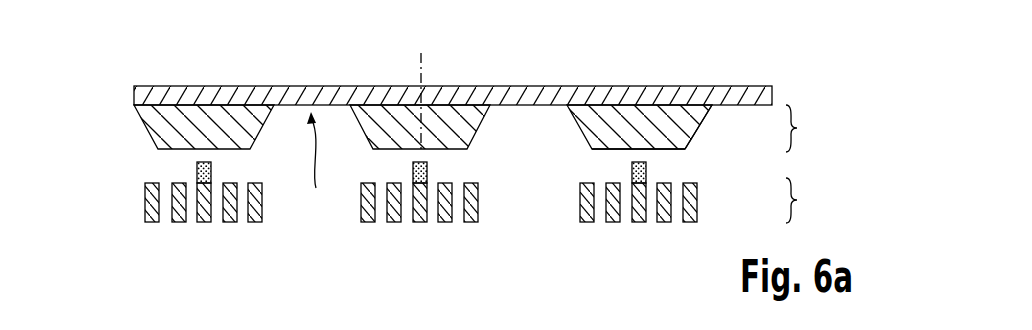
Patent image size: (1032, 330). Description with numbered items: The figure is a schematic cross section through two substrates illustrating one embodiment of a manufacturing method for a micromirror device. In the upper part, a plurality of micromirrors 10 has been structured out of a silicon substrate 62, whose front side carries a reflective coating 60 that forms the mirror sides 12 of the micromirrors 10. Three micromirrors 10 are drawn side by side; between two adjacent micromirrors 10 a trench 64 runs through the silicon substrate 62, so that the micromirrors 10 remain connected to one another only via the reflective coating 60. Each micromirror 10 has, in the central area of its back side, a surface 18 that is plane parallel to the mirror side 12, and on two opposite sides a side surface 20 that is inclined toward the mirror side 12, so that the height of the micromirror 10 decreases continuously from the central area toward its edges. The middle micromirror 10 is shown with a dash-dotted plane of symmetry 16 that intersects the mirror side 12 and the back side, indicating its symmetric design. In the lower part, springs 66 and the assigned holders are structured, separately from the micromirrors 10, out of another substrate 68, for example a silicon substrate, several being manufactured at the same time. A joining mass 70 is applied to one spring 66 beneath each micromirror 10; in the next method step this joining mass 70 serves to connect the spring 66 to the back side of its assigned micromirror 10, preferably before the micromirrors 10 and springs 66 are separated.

The micromirror 10 is at (167, 128).
The mirror side 12 is at (218, 88).
The plane of symmetry 16 is at (419, 72).
The surface 18 is at (663, 150).
The side surface 20 is at (704, 122).
The reflective coating 60 is at (638, 95).
The silicon substrate 62 is at (797, 128).
The trench 64 is at (320, 164).
The spring 66 is at (228, 213).
The substrate 68 is at (797, 200).
The joining mass 70 is at (197, 165).